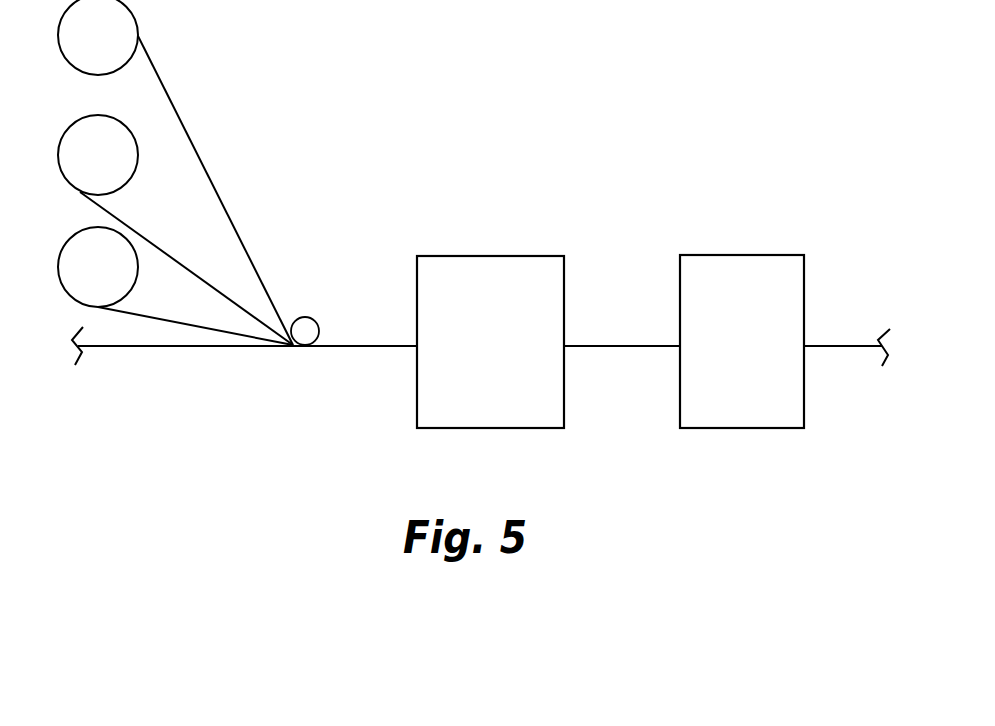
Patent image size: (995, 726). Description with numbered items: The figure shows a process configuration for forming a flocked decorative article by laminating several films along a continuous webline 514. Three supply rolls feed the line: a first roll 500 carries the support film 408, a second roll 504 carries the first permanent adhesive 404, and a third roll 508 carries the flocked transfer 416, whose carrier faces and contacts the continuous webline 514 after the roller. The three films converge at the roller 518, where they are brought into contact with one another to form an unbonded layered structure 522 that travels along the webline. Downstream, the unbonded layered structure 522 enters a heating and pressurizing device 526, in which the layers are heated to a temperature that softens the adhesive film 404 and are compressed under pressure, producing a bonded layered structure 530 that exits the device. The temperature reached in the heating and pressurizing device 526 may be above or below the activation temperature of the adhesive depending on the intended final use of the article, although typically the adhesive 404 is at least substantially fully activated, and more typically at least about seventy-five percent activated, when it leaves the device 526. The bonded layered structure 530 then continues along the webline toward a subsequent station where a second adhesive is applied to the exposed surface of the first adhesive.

The first roll 500 is at (120, 48).
The second roll 504 is at (120, 168).
The third roll 508 is at (120, 280).
The support layer 408 is at (228, 210).
The first permanent adhesive 404 is at (165, 250).
The flocked transfer 416 is at (205, 325).
The continuous webline 514 is at (123, 347).
The roller 518 is at (305, 331).
The unbonded layered structure 522 is at (363, 347).
The heating and pressurizing device 526 is at (462, 256).
The bonded layered structure 530 is at (623, 347).